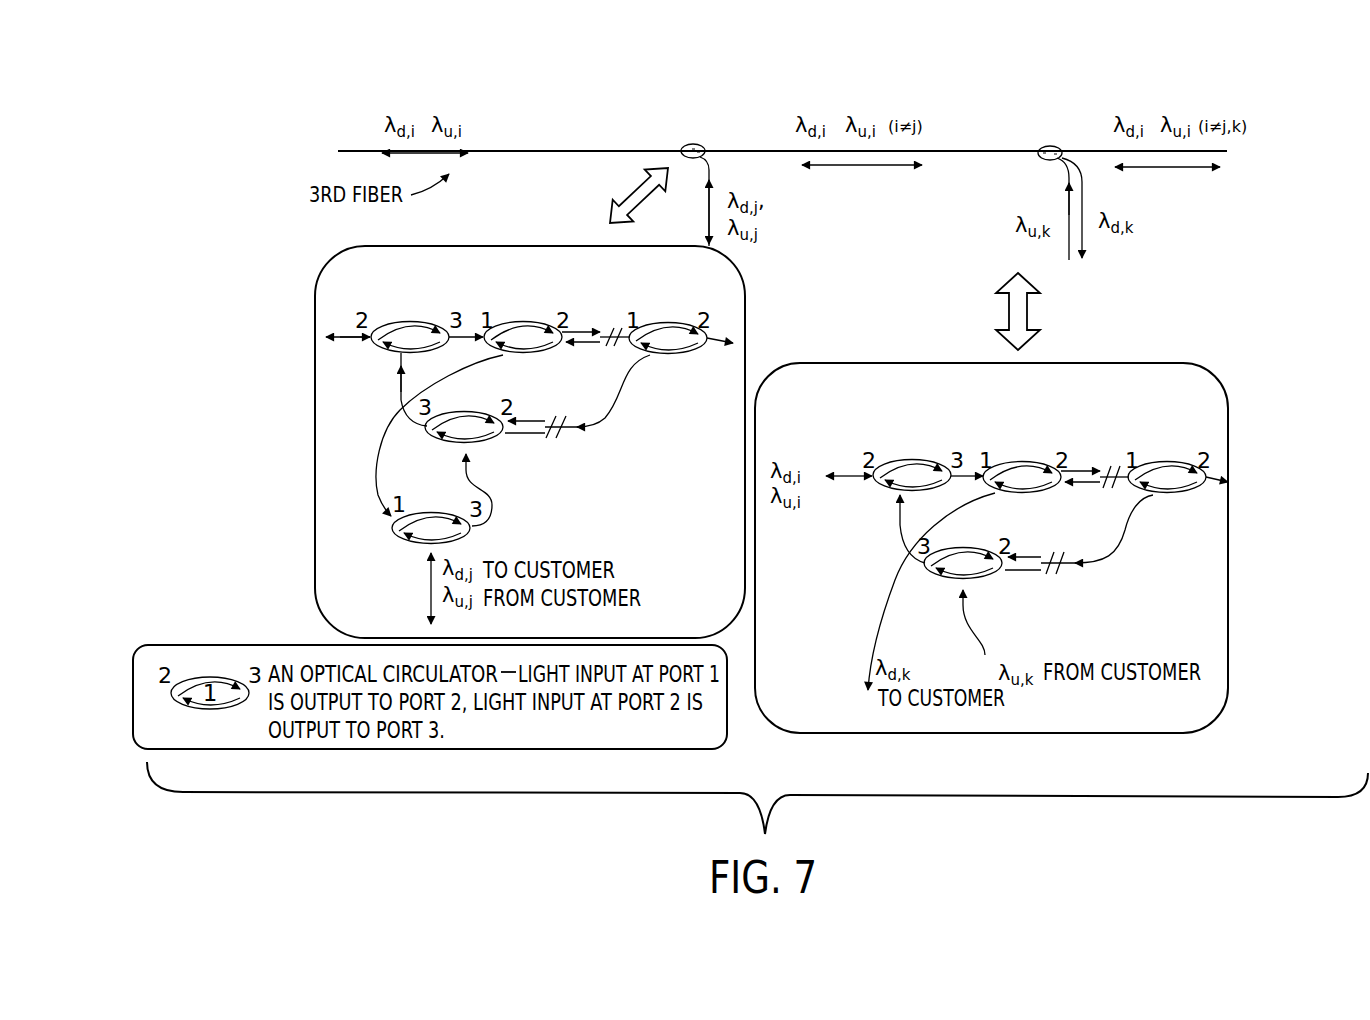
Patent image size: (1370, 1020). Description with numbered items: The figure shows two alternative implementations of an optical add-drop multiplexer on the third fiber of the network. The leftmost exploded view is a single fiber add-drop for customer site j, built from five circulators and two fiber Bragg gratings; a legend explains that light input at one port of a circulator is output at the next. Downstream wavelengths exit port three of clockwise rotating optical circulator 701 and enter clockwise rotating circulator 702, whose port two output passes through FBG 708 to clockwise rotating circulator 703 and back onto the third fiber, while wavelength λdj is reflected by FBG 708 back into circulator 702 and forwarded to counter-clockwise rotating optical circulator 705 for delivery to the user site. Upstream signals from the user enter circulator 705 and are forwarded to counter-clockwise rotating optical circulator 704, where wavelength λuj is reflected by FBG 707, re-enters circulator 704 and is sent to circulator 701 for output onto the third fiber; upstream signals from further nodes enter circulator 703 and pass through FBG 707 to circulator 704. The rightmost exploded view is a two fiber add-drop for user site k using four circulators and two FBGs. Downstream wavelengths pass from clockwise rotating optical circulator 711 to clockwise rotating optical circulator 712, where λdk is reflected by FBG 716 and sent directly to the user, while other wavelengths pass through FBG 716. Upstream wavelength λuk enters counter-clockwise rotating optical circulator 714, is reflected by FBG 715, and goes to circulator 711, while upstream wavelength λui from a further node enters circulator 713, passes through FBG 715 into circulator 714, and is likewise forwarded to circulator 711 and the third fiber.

The clockwise rotating optical circulator 701 is at (407, 320).
The clockwise rotating circulator 702 is at (518, 320).
The clockwise rotating circulator 703 is at (681, 369).
The counter-clockwise rotating optical circulator 704 is at (498, 446).
The counter-clockwise rotating optical circulator 705 is at (482, 538).
The fiber Bragg grating 707 is at (590, 439).
The fiber Bragg grating 708 is at (606, 320).
The clockwise rotating optical circulator 711 is at (905, 457).
The clockwise rotating optical circulator 712 is at (1014, 457).
The circulator 713 is at (1159, 457).
The counter-clockwise rotating optical circulator 714 is at (996, 596).
The fiber Bragg grating 715 is at (1089, 589).
The fiber Bragg grating 716 is at (1104, 457).